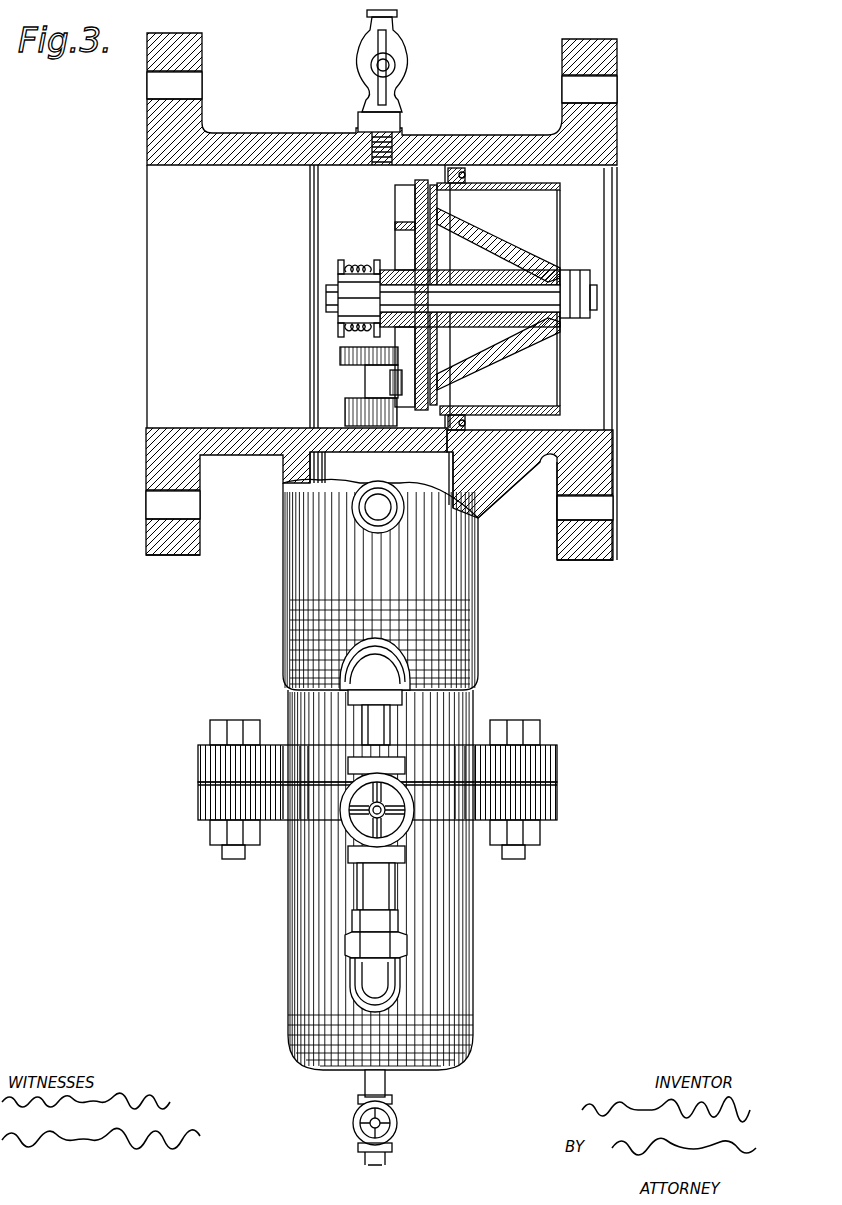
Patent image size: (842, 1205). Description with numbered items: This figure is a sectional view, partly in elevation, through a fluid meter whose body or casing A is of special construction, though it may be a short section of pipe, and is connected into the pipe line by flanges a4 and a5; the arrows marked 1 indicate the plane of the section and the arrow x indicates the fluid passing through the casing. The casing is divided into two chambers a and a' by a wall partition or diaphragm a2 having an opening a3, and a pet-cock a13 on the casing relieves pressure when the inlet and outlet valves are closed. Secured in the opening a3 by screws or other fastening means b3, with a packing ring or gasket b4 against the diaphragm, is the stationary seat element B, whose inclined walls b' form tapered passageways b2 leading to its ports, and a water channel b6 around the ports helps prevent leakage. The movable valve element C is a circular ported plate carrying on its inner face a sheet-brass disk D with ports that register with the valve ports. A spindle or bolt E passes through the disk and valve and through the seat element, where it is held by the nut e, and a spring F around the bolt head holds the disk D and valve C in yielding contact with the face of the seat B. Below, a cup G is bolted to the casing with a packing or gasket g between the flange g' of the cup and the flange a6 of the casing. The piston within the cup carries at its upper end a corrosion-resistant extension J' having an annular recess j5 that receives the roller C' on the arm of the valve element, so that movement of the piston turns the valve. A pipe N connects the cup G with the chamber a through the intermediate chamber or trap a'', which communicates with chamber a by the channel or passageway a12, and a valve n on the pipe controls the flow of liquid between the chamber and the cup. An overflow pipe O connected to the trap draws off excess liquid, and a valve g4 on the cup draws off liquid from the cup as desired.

The section line 1 is at (378, 12).
The body or casing A is at (308, 145).
The chamber a is at (642, 299).
The chamber a' is at (229, 296).
The intermediate chamber or trap a'' is at (386, 468).
The wall partition or diaphragm a2 is at (438, 163).
The opening a3 is at (468, 395).
The flange a4 is at (606, 557).
The flange a5 is at (180, 553).
The flange of the casing a6 is at (204, 756).
The channel or passageway a12 is at (468, 472).
The pet-cock a13 is at (403, 65).
The stationary seat element B is at (558, 186).
The inclined walls b' is at (498, 299).
The tapered passageways b2 is at (497, 303).
The screws or fastening means b3 is at (464, 208).
The packing ring or gasket b4 is at (466, 165).
The water channel b6 is at (402, 232).
The movable valve element C is at (390, 296).
The roller C' is at (334, 408).
The disk D is at (415, 182).
The spindle or bolt E is at (443, 298).
The nut e is at (577, 320).
The spring F is at (344, 266).
The cup G is at (474, 922).
The packing or gasket g is at (359, 768).
The flange of the cup g' is at (358, 808).
The valve g4 is at (396, 1114).
The extension J' is at (335, 350).
The annular recess j5 is at (352, 385).
The pipe N is at (358, 884).
The valve n is at (342, 808).
The overflow pipe O is at (370, 522).
The direction of flow x is at (628, 298).